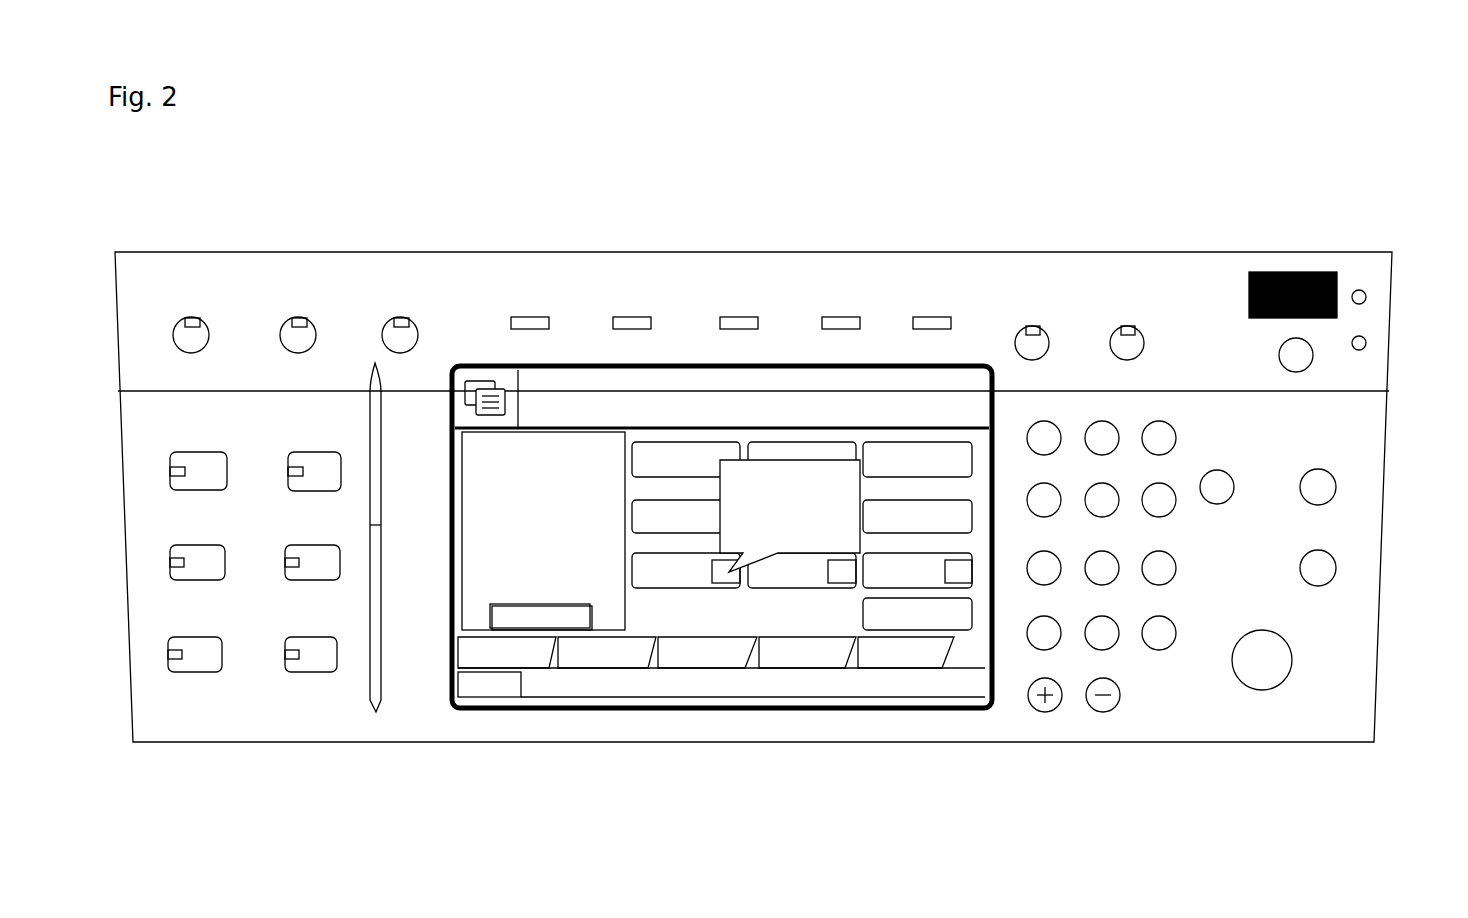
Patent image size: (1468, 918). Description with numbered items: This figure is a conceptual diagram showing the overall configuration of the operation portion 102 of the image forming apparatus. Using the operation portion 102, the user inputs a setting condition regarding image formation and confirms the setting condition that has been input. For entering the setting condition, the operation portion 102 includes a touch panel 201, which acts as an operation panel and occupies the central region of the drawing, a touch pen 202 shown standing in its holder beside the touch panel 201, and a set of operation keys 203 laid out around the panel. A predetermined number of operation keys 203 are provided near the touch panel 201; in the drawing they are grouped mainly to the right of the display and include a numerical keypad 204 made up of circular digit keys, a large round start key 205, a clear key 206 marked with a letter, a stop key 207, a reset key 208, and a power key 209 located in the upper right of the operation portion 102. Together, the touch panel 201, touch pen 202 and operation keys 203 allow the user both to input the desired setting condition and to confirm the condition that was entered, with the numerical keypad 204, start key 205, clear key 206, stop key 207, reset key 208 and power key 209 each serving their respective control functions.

The operation portion 102 is at (764, 756).
The touch panel 201 is at (557, 730).
The touch pen 202 is at (376, 712).
The operation keys 203 is at (1007, 784).
The numerical keypad 204 is at (1152, 683).
The start key 205 is at (1262, 690).
The clear key 206 is at (1209, 503).
The stop key 207 is at (1319, 586).
The reset key 208 is at (1322, 500).
The power key 209 is at (1305, 366).